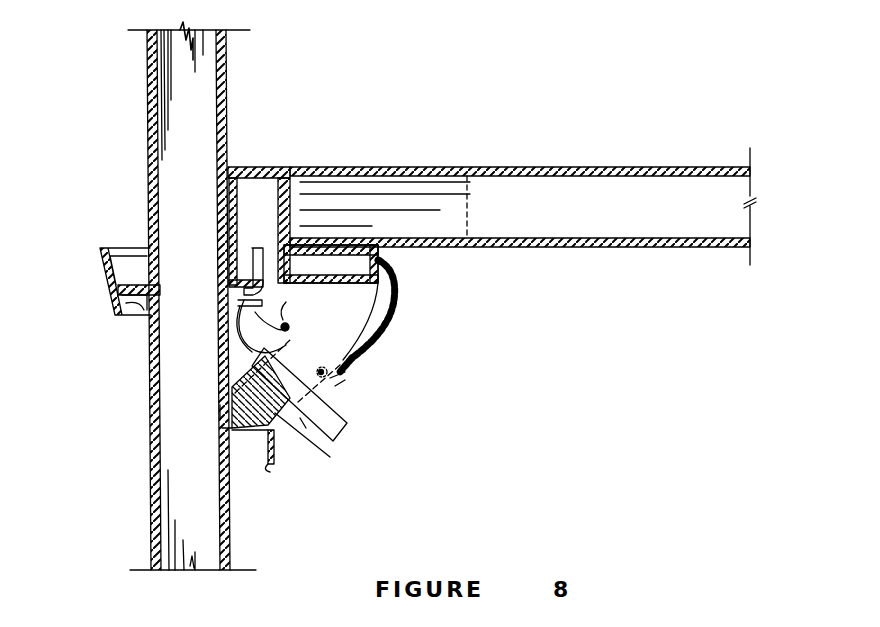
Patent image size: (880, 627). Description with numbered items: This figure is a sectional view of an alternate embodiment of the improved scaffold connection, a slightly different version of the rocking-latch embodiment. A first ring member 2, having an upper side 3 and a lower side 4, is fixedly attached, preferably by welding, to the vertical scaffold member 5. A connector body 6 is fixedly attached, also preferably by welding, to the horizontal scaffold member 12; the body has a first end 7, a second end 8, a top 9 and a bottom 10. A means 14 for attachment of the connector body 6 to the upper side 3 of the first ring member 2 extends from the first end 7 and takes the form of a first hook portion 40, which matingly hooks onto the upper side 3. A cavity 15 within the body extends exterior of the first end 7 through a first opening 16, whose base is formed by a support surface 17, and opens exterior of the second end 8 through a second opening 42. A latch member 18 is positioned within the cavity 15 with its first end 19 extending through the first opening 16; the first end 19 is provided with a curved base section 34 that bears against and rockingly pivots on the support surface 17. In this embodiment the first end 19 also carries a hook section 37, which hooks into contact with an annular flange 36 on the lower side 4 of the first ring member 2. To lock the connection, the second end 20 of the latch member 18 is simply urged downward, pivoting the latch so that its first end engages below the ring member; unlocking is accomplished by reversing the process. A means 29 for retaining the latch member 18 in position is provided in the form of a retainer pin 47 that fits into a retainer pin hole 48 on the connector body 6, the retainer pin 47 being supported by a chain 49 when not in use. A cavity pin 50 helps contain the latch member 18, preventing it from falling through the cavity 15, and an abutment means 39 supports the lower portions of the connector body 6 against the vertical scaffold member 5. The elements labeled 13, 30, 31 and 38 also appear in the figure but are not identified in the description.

The first ring member 2 is at (96, 265).
The upper side 3 is at (91, 288).
The lower side 4 is at (130, 342).
The vertical scaffold member 5 is at (232, 540).
The connector body 6 is at (404, 273).
The first end 7 is at (218, 410).
The second end 8 is at (350, 369).
The top 9 is at (523, 193).
The bottom 10 is at (258, 452).
The horizontal scaffold member 12 is at (630, 248).
The rail top wall 13 is at (585, 167).
The means for attachment 14 is at (238, 232).
The cavity 15 is at (339, 311).
The first opening 16 is at (248, 346).
The support surface 17 is at (289, 424).
The latch member 18 is at (291, 335).
The first end 19 is at (255, 316).
The second end 20 is at (348, 428).
The means for retaining 29 is at (337, 378).
The hook 30 is at (276, 464).
The bracket side wall 31 is at (262, 168).
The curved base section 34 is at (250, 372).
The annular flange 36 is at (136, 305).
The hook section 37 is at (238, 301).
The bracket top wall 38 is at (240, 167).
The abutment means 39 is at (226, 433).
The first hook portion 40 is at (263, 250).
The second opening 42 is at (302, 420).
The retainer pin 47 is at (342, 386).
The retainer pin hole 48 is at (322, 368).
The chain 49 is at (393, 312).
The cavity pin 50 is at (287, 322).